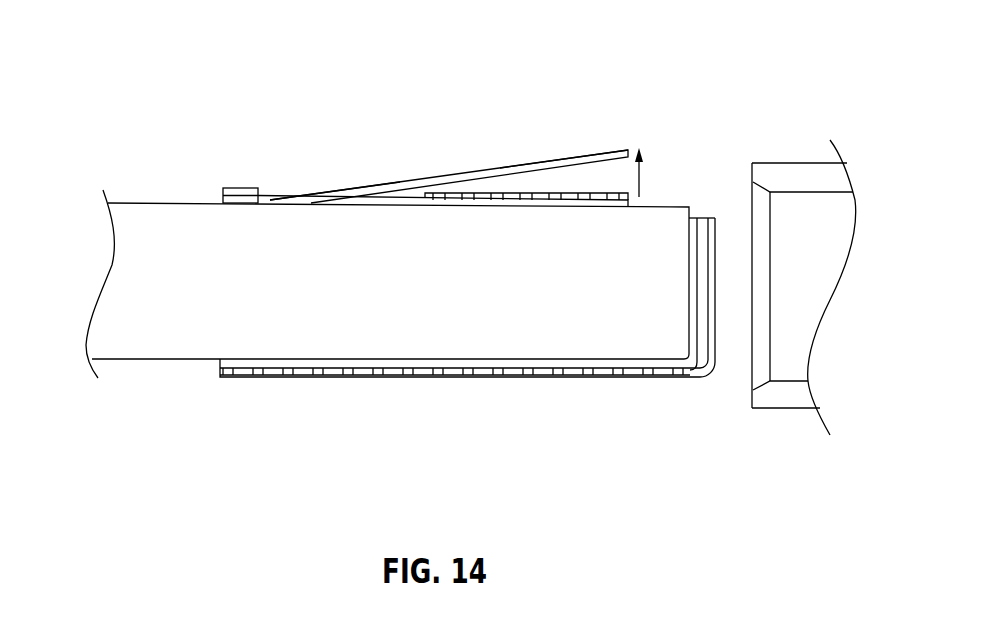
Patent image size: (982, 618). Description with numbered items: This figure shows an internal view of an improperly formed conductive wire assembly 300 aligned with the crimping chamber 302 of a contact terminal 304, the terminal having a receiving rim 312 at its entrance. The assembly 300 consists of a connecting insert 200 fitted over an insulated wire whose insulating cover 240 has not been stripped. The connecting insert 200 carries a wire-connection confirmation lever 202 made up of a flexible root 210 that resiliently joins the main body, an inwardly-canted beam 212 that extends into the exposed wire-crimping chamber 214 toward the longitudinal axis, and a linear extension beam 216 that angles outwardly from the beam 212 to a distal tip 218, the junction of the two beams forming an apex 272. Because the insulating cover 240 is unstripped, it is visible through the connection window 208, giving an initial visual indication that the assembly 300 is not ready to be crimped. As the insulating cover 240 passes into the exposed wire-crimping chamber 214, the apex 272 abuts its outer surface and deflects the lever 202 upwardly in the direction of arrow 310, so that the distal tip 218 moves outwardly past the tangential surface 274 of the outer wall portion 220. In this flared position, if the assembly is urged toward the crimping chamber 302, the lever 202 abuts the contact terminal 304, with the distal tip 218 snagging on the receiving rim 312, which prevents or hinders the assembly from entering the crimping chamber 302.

The conductive wire assembly 300 is at (146, 138).
The wire-connection confirmation lever 202 is at (438, 182).
The insulating cover 240 is at (130, 360).
The arrow 310 is at (645, 172).
The connection window 208 is at (668, 206).
The exposed wire-crimping chamber 214 is at (700, 350).
The connecting insert 200 is at (358, 378).
The flexible root 210 is at (265, 190).
The inwardly-canted beam 212 is at (293, 192).
The outer wall portion 220 is at (548, 188).
The linear extension beam 216 is at (378, 187).
The apex 272 is at (327, 190).
The tangential surface 274 is at (602, 195).
The distal tip 218 is at (634, 146).
The crimping chamber 302 is at (785, 228).
The receiving rim 312 is at (763, 160).
The contact terminal 304 is at (788, 413).